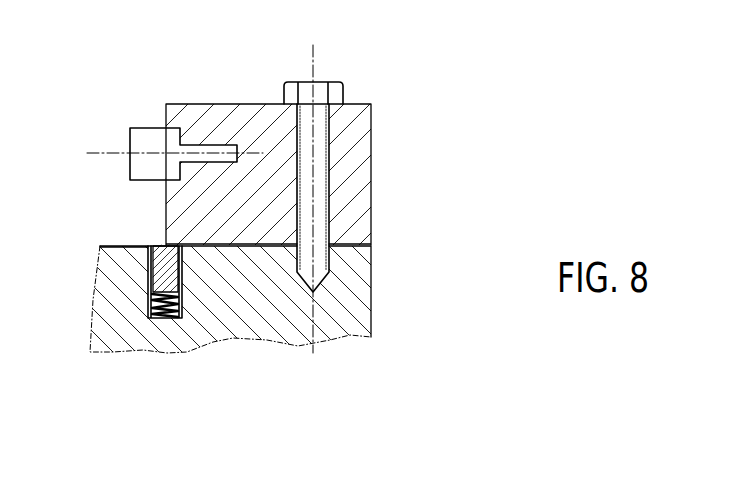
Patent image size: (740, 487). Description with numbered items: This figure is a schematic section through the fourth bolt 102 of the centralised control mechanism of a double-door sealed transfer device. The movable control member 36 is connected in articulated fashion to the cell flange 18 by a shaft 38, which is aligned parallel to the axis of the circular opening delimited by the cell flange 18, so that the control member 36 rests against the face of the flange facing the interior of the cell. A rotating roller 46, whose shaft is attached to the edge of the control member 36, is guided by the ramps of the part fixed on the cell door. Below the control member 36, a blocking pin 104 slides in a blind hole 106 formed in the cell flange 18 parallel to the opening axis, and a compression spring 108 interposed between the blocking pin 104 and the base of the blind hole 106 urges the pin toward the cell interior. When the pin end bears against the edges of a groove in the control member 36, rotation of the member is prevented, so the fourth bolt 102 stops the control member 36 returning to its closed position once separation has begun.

The cell flange 18 is at (108, 303).
The movable control member 36 is at (167, 90).
The shaft 38 is at (320, 173).
The rotating roller 46 is at (140, 137).
The fourth bolt 102 is at (122, 251).
The blocking pin 104 is at (175, 272).
The blind hole 106 is at (150, 317).
The compression spring 108 is at (170, 318).